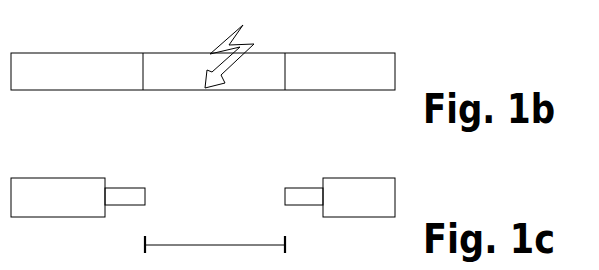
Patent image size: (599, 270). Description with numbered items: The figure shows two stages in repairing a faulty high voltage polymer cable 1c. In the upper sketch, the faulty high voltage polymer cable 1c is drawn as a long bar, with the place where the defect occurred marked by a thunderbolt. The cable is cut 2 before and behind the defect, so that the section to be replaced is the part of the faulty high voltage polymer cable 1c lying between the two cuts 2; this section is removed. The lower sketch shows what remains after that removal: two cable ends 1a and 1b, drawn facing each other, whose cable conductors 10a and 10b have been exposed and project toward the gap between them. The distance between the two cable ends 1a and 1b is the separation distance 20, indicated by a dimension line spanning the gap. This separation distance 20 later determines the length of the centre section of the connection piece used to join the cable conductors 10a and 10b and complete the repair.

In FIG. 1c, the cable end 1a is at (80, 183).
In FIG. 1c, the cable end 1b is at (353, 187).
In FIG. 1b, the faulty high voltage polymer cable 1c is at (357, 73).
In FIG. 1b, the cut 2 is at (143, 64).
In FIG. 1c, the cable conductor 10a is at (118, 192).
In FIG. 1c, the cable conductor 10b is at (293, 192).
In FIG. 1c, the separation distance 20 is at (238, 243).